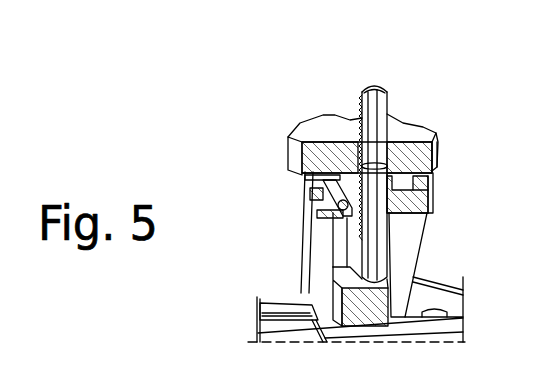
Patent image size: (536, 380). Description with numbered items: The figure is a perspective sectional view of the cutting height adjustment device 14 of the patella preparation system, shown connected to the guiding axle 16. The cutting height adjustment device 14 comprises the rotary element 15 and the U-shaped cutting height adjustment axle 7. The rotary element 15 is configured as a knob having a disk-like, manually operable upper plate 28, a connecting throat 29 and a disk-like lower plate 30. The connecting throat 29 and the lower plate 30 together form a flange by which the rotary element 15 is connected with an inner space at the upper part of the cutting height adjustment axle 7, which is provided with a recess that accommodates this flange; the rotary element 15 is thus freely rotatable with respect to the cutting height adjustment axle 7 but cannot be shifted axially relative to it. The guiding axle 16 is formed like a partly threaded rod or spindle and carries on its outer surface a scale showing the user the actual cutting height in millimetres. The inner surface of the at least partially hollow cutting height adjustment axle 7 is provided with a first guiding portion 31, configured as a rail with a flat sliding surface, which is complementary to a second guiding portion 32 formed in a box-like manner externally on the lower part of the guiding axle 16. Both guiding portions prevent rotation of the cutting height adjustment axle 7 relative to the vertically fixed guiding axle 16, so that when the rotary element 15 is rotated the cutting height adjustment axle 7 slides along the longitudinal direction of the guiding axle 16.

The cutting height adjustment axle 7 is at (310, 231).
The cutting height adjustment device 14 is at (417, 101).
The rotary element 15 is at (300, 127).
The guiding axle 16 is at (374, 84).
The upper plate 28 is at (442, 146).
The connecting throat 29 is at (400, 181).
The lower plate 30 is at (411, 198).
The first guiding portion 31 is at (332, 250).
The second guiding portion 32 is at (330, 293).